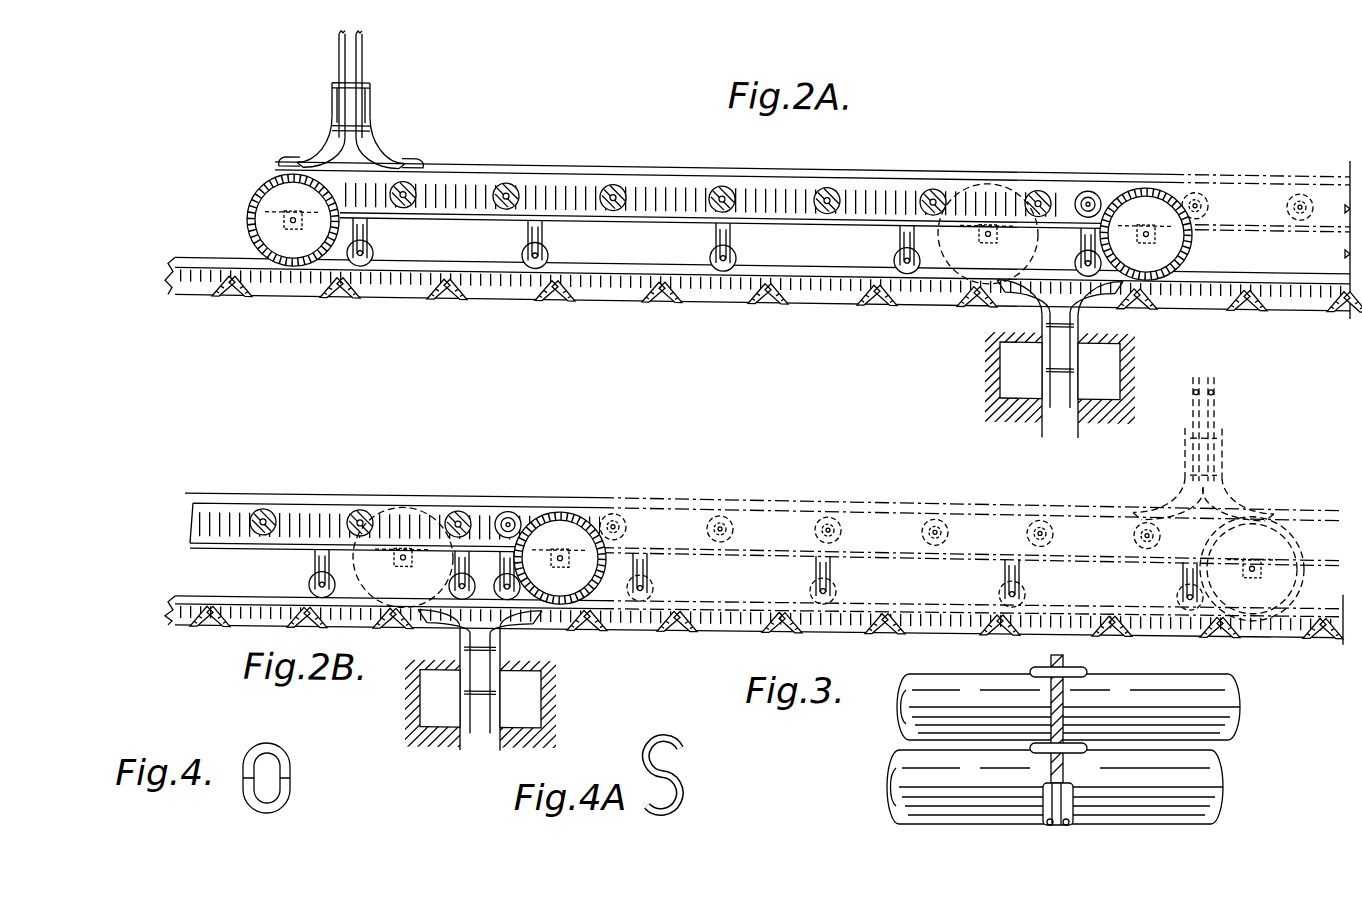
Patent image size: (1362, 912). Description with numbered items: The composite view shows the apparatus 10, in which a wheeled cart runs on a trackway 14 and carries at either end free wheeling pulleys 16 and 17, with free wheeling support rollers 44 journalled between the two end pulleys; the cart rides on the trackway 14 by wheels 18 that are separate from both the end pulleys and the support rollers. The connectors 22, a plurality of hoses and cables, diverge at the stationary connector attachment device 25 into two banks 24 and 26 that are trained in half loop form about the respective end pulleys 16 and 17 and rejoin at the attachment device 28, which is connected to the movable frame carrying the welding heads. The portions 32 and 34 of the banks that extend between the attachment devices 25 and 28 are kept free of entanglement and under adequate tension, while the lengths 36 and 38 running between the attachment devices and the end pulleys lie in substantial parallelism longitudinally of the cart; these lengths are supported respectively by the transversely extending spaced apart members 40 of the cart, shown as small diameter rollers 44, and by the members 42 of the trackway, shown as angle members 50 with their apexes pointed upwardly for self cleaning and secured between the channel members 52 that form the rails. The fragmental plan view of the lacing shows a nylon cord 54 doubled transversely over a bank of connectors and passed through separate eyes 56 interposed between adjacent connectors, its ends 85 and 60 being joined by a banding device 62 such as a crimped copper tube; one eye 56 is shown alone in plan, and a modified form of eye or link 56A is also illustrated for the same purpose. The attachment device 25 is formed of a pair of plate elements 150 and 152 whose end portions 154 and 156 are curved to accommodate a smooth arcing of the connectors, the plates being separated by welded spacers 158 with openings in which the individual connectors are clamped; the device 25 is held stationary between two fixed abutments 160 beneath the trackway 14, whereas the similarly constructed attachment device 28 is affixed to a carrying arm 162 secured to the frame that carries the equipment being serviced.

In FIG. 2A, the apparatus 10 is at (290, 129).
In FIG. 2B, the apparatus 10 is at (258, 487).
In FIG. 2A, the trackway 14 is at (216, 295).
In FIG. 2B, the trackway 14 is at (218, 626).
In FIG. 2A, the free wheeling pulley 16 is at (293, 244).
In FIG. 2A, the free wheeling pulley 17 is at (1176, 175).
In FIG. 2B, the free wheeling pulley 17 is at (1292, 526).
In FIG. 2A, the wheels 18 is at (520, 243).
In FIG. 2B, the wheels 18 is at (302, 579).
In FIG. 2A, the connectors 22 is at (900, 168).
In FIG. 2B, the connectors 22 is at (762, 529).
In FIG. 2A, the bank of connectors 24 is at (508, 284).
In FIG. 2A, the stationary connector attachment device 25 is at (1059, 359).
In FIG. 2B, the stationary connector attachment device 25 is at (807, 586).
In FIG. 2A, the bank of connectors 26 is at (672, 156).
In FIG. 2A, the attachment device 28 is at (725, 195).
In FIG. 2A, the connector portion 32 is at (600, 161).
In FIG. 2A, the connector portion 34 is at (628, 270).
In FIG. 2A, the connector length 36 is at (728, 162).
In FIG. 2A, the connector length 38 is at (715, 270).
In FIG. 2A, the transversely extending spaced apart members 40 is at (493, 190).
In FIG. 2B, the transversely extending spaced apart members 40 is at (345, 516).
In FIG. 2A, the transversely extending spaced apart members 42 is at (232, 296).
In FIG. 2B, the transversely extending spaced apart members 42 is at (760, 622).
In FIG. 2A, the free wheeling support rollers 44 is at (408, 178).
In FIG. 2B, the free wheeling support rollers 44 is at (275, 509).
In FIG. 2A, the angle members 50 is at (556, 294).
In FIG. 2B, the angle members 50 is at (787, 621).
In FIG. 2A, the channel member 52 is at (802, 283).
In FIG. 3, the nylon cord 54 is at (1066, 706).
In FIG. 3, the eye 56 is at (1045, 676).
In FIG. 4, the eye 56 is at (292, 767).
In FIG. 4A, the S-hook 56A is at (689, 746).
In FIG. 3, the cord end 60 is at (1070, 827).
In FIG. 3, the banding device 62 is at (1040, 797).
In FIG. 3, the cord end 85 is at (1065, 778).
In FIG. 2A, the plate element 150 is at (372, 111).
In FIG. 2B, the plate element 150 is at (505, 651).
In FIG. 2A, the plate element 152 is at (330, 120).
In FIG. 2B, the plate element 152 is at (460, 631).
In FIG. 2A, the curved end portion 154 is at (400, 157).
In FIG. 2A, the curved end portion 156 is at (285, 152).
In FIG. 2A, the spacers 158 is at (362, 79).
In FIG. 2B, the spacers 158 is at (492, 695).
In FIG. 2A, the fixed abutments 160 is at (1015, 362).
In FIG. 2B, the fixed abutments 160 is at (428, 695).
In FIG. 2A, the carrying arm 162 is at (418, 17).
In FIG. 2B, the carrying arm 162 is at (1225, 368).